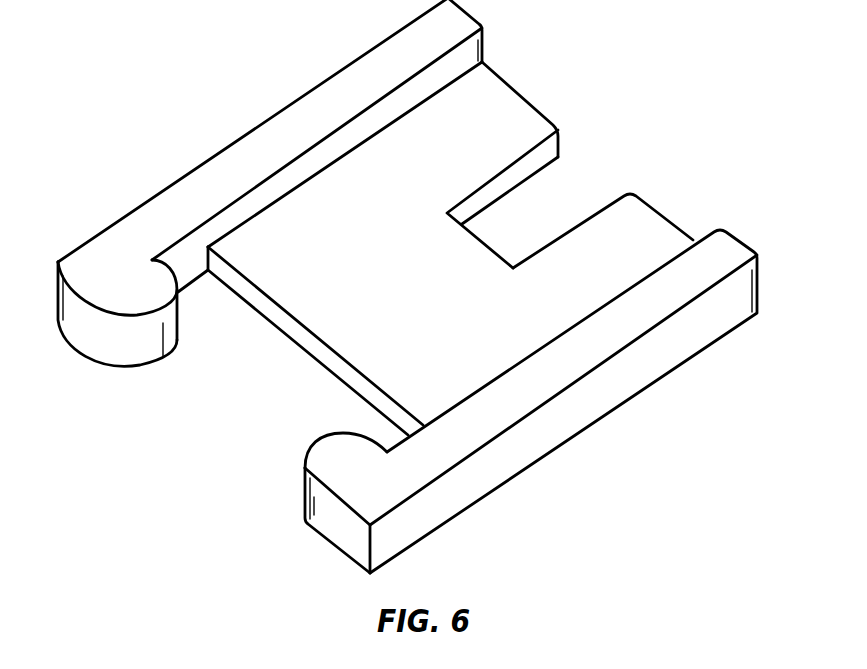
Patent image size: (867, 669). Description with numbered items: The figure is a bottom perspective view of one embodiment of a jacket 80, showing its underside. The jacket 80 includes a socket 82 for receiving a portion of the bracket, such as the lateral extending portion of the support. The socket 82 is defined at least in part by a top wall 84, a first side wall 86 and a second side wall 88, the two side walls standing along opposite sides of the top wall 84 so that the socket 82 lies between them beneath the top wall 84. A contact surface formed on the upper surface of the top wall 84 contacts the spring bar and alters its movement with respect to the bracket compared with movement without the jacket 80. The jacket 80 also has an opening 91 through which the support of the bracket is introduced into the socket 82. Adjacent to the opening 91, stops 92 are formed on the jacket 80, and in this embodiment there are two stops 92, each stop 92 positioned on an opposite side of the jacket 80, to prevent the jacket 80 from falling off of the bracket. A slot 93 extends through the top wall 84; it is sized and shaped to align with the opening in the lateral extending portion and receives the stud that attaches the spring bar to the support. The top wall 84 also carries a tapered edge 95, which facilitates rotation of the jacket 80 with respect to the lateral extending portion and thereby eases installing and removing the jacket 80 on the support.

The jacket 80 is at (175, 84).
The socket 82 is at (513, 123).
The top wall 84 is at (293, 341).
The first side wall 86 is at (486, 53).
The second side wall 88 is at (699, 236).
The opening 91 is at (168, 245).
The stop 92 is at (307, 445).
The slot 93 is at (593, 213).
The tapered edge 95 is at (264, 297).